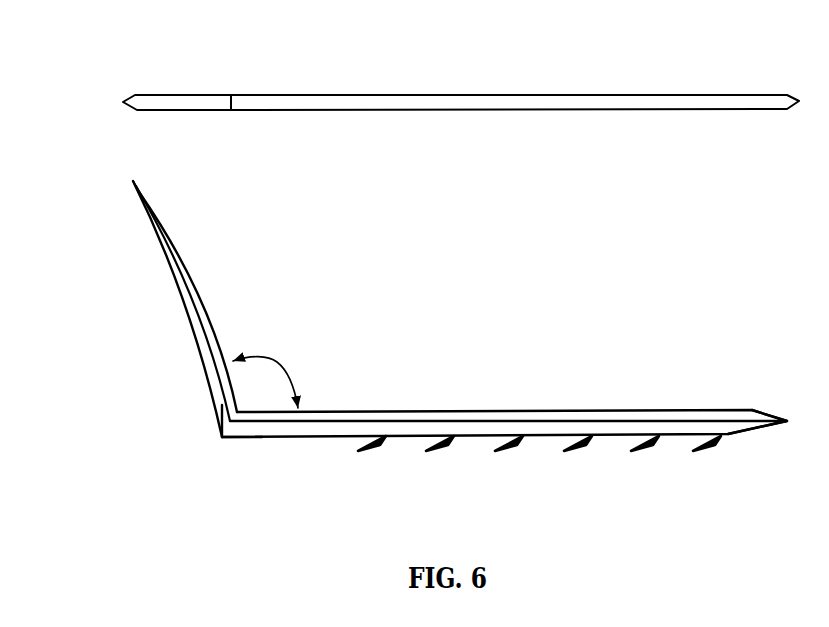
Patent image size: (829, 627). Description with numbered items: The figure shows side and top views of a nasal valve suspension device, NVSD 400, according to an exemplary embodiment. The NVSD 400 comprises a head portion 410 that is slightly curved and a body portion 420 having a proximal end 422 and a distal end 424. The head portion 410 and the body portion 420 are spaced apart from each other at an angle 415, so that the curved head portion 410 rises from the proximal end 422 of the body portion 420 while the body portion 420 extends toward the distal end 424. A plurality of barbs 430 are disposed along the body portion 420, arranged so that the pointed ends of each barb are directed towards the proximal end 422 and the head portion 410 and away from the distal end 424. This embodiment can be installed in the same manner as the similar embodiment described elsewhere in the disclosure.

The nasal valve suspension device 400 is at (461, 261).
The head portion 410 is at (175, 95).
The angle 415 is at (277, 357).
The body portion 420 is at (754, 95).
The proximal end 422 is at (223, 438).
The distal end 424 is at (760, 410).
The barbs 430 is at (708, 450).